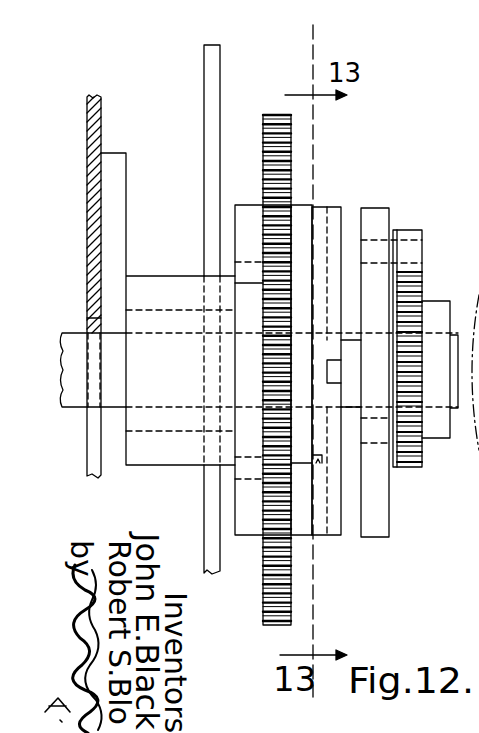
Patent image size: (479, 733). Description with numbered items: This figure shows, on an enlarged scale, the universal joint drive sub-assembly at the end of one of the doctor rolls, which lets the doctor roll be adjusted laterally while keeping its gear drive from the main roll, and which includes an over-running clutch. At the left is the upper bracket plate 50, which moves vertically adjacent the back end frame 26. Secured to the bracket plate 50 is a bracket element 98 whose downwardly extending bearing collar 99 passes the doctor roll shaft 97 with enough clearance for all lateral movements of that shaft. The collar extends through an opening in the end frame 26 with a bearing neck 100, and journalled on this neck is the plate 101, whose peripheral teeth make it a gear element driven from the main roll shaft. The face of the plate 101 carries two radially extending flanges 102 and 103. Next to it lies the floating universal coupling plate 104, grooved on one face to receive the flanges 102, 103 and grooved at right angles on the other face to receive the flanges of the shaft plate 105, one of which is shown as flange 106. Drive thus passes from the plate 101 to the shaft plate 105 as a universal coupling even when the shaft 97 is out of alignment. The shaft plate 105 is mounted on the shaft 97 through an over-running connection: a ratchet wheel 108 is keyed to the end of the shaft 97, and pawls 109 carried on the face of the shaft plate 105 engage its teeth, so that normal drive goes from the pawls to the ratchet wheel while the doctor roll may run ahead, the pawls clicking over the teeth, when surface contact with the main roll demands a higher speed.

The end frame 26 is at (205, 110).
The bracket plate 50 is at (101, 97).
The doctor roll shaft 97 is at (66, 408).
The bracket element 98 is at (116, 197).
The bearing collar 99 is at (163, 466).
The bearing neck 100 is at (164, 310).
The plate 101 is at (275, 232).
The radially extending flange 102 is at (300, 218).
The radially extending flange 103 is at (302, 527).
The floating universal coupling plate 104 is at (338, 208).
The shaft plate 105 is at (378, 212).
The radially extending flange 106 is at (348, 373).
The ratchet wheel 108 is at (398, 468).
The pawl 109 is at (410, 252).